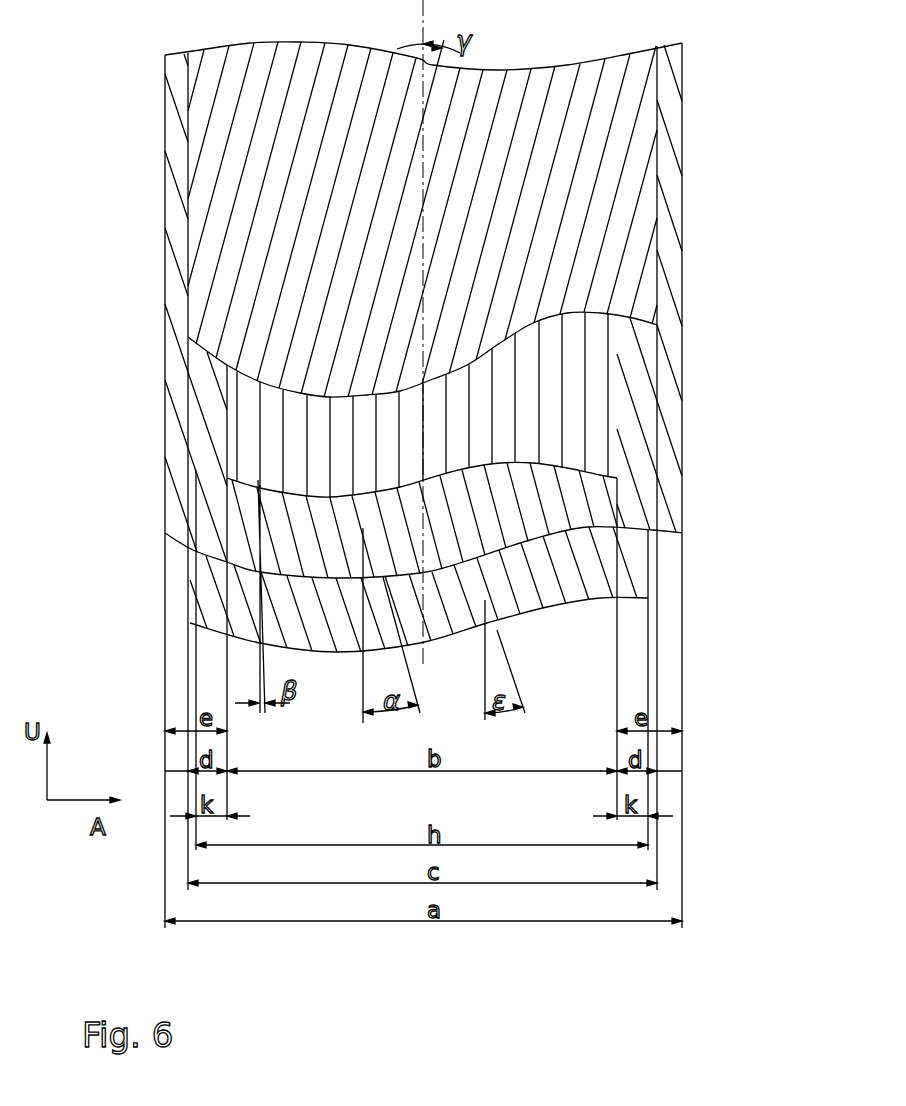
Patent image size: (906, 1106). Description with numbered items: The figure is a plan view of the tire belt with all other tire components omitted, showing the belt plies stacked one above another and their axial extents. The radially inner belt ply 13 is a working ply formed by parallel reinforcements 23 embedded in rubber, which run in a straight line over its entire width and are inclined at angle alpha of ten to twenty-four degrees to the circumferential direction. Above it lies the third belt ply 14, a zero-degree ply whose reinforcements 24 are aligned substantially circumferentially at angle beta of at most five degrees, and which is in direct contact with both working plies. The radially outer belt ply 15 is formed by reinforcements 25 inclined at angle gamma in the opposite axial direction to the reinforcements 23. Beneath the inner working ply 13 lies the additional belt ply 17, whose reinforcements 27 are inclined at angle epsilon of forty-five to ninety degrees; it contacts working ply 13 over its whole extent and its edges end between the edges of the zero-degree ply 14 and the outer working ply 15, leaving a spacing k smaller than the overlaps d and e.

The radially inner belt ply 13 is at (663, 241).
The third belt ply 14 is at (593, 433).
The radially outer belt ply 15 is at (623, 210).
The belt ply 17 is at (563, 585).
The reinforcements 23 is at (200, 470).
The land / chamfer band 24 is at (283, 437).
The reinforcements 25 is at (207, 208).
The reinforcements 27 is at (297, 610).